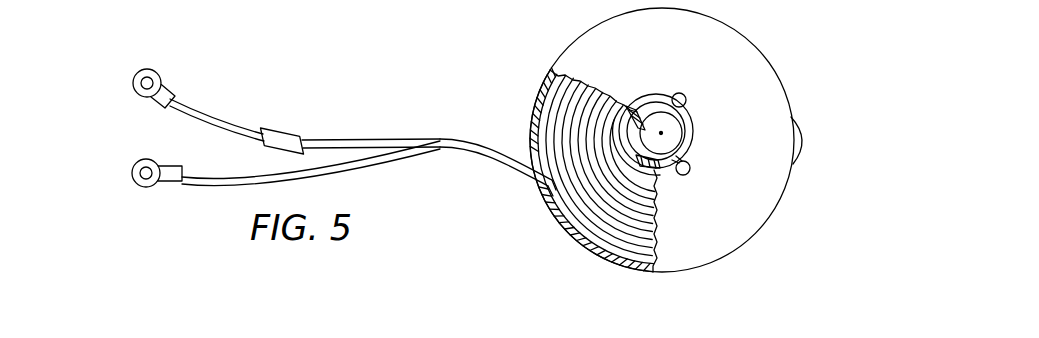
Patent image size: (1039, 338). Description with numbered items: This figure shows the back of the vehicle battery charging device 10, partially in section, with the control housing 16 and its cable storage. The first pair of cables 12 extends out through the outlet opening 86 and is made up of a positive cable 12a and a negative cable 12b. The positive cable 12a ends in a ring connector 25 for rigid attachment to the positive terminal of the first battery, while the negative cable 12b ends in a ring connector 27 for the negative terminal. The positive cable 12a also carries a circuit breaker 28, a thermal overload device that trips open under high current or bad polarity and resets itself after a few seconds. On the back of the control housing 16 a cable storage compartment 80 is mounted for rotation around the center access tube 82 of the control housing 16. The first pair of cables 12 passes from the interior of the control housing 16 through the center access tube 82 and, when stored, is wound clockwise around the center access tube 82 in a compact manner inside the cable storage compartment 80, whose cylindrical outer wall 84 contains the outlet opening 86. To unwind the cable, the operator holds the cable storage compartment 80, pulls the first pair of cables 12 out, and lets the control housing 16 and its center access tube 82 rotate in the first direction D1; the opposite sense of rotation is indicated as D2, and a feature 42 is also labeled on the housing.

The vehicle battery charging device 10 is at (928, 136).
The first pair of cables 12 is at (492, 128).
The positive cable 12a is at (232, 128).
The negative cable 12b is at (253, 182).
The control housing 16 is at (828, 163).
The ring connector 25 is at (160, 77).
The ring connector 27 is at (153, 159).
The circuit breaker 28 is at (292, 130).
The projection 42 is at (806, 138).
The cable storage compartment 80 is at (770, 89).
The center access tube 82 is at (694, 143).
The cylindrical outer wall 84 is at (562, 55).
The outlet opening 86 is at (530, 187).
The first direction D1 is at (552, 236).
The second rotation direction D2 is at (777, 228).